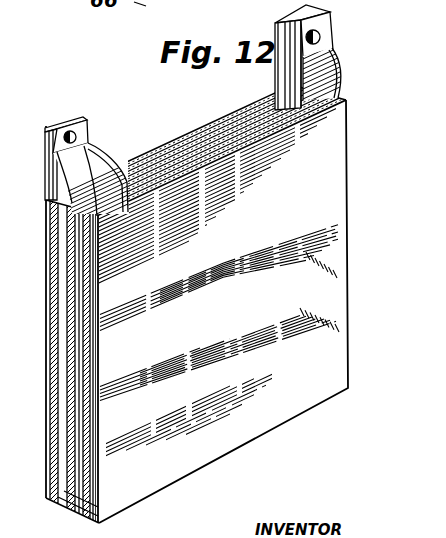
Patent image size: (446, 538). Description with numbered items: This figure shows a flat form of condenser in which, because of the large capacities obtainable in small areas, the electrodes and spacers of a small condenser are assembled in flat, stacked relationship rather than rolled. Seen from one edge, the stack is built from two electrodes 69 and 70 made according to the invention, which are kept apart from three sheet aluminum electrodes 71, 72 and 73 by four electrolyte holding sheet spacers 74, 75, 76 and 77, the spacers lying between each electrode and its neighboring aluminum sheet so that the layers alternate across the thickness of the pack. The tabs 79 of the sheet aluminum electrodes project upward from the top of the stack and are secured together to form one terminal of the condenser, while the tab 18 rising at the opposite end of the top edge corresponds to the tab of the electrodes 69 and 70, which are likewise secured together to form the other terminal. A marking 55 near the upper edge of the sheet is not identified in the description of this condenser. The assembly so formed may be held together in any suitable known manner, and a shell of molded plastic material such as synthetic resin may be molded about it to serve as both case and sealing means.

The terminal tab 18 is at (325, 12).
The tabs of the sheet aluminum electrodes 79 is at (61, 124).
The lead 55 is at (122, 0).
The electrode 69 is at (61, 256).
The electrode 70 is at (82, 302).
The sheet aluminum electrode 71 is at (46, 334).
The sheet aluminum electrode 72 is at (74, 350).
The sheet aluminum electrode 73 is at (100, 368).
The electrolyte holding sheet spacer 74 is at (52, 405).
The electrolyte holding sheet spacer 75 is at (71, 427).
The electrolyte holding sheet spacer 76 is at (77, 447).
The electrolyte holding sheet spacer 77 is at (94, 470).